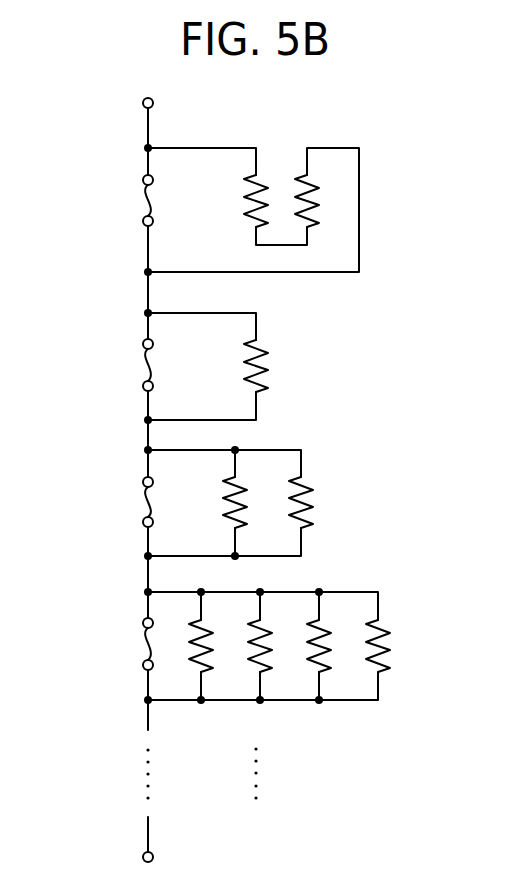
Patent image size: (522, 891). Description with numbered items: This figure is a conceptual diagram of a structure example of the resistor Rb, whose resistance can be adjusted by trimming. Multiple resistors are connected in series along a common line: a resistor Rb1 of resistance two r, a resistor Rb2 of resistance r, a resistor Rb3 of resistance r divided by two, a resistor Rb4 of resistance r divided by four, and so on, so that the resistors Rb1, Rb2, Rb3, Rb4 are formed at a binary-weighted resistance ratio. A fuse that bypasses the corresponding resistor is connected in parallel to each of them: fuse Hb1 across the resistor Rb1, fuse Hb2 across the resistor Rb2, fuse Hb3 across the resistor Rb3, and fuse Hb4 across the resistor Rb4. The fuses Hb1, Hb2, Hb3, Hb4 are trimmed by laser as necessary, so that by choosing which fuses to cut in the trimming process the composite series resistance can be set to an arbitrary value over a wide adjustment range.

The fuse Hb1 is at (142, 209).
The fuse Hb2 is at (142, 372).
The fuse Hb3 is at (142, 510).
The fuse Hb4 is at (142, 653).
The resistor Rb1 is at (303, 132).
The resistor Rb2 is at (287, 354).
The resistor Rb3 is at (332, 489).
The resistor Rb4 is at (417, 617).